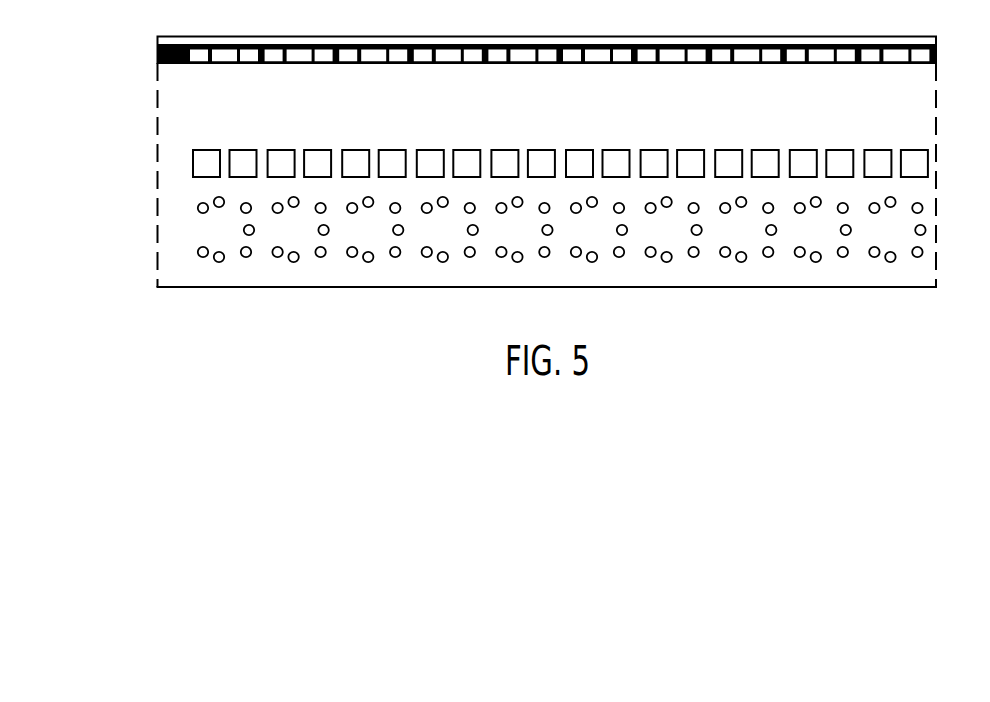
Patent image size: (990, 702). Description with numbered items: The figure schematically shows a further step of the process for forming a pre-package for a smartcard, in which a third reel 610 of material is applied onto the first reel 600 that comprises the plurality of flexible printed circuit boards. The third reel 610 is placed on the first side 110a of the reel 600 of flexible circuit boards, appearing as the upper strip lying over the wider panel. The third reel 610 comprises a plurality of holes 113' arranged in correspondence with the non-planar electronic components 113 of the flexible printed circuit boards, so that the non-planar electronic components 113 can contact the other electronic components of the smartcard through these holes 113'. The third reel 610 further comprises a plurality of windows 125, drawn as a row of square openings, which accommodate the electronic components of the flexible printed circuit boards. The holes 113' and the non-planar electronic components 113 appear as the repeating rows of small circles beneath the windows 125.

The first reel 600 is at (177, 52).
The third reel 610 is at (192, 119).
The first side 110a is at (498, 136).
The windows 125 is at (211, 160).
The holes 113' is at (500, 215).
The non-planar electronic components 113 is at (554, 282).